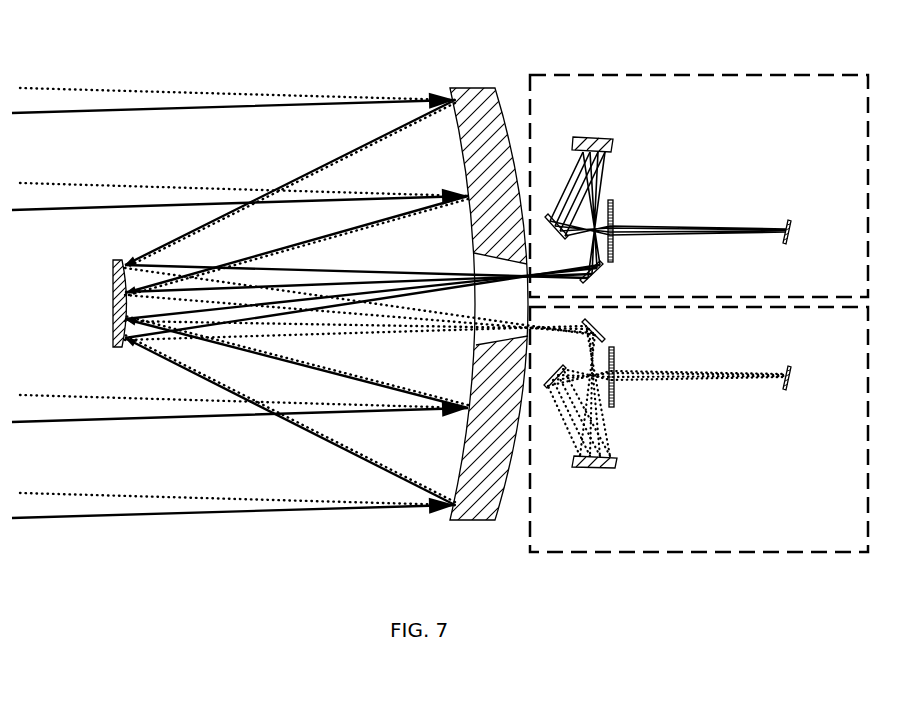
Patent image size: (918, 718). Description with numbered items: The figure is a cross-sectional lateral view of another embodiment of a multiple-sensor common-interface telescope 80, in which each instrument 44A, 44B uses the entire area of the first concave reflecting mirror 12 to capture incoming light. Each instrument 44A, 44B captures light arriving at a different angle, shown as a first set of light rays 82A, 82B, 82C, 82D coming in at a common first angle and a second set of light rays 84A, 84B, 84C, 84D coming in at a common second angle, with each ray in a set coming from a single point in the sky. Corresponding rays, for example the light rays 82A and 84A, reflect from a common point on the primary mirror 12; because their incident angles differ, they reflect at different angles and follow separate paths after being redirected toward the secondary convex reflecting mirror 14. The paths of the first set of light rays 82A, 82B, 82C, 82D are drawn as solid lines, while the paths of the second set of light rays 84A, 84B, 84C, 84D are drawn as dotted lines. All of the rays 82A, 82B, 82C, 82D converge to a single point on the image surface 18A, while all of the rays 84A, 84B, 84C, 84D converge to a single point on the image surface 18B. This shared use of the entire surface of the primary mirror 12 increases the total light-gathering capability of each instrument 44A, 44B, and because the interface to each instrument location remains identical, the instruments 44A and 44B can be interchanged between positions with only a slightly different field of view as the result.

The multiple-sensor common-interface telescope 80 is at (381, 27).
The first concave reflecting mirror 12 is at (483, 90).
The secondary convex reflecting mirror 14 is at (120, 271).
The image surface 18A is at (790, 222).
The image surface 18B is at (790, 366).
The instrument 44A is at (698, 75).
The instrument 44B is at (775, 553).
The light ray 82A is at (68, 86).
The light ray 82B is at (76, 181).
The light ray 82C is at (82, 393).
The light ray 82D is at (65, 491).
The light ray 84A is at (110, 116).
The light ray 84B is at (98, 211).
The light ray 84C is at (102, 427).
The light ray 84D is at (103, 521).